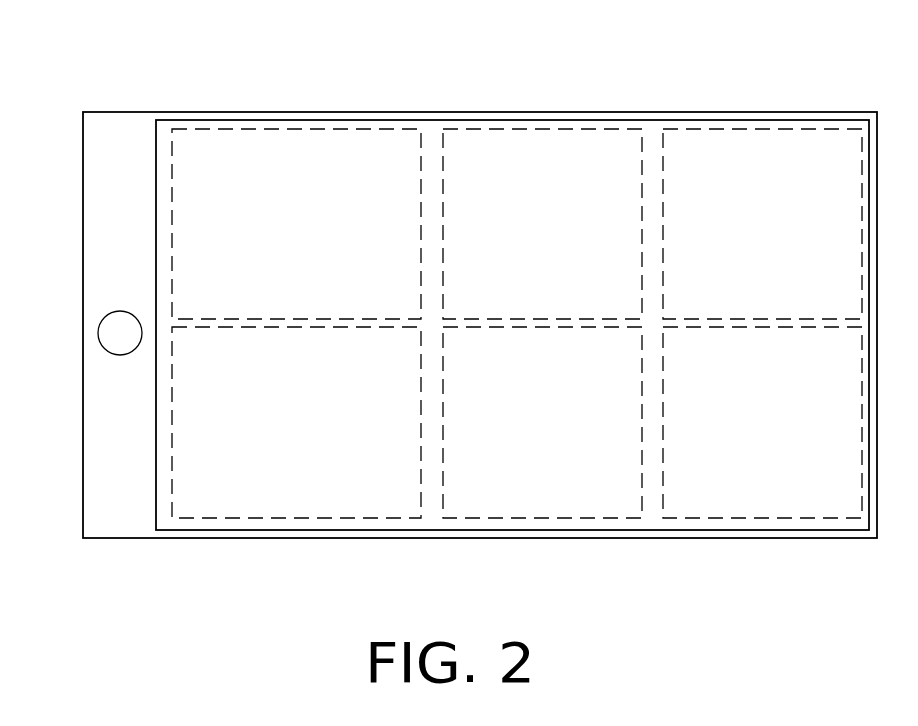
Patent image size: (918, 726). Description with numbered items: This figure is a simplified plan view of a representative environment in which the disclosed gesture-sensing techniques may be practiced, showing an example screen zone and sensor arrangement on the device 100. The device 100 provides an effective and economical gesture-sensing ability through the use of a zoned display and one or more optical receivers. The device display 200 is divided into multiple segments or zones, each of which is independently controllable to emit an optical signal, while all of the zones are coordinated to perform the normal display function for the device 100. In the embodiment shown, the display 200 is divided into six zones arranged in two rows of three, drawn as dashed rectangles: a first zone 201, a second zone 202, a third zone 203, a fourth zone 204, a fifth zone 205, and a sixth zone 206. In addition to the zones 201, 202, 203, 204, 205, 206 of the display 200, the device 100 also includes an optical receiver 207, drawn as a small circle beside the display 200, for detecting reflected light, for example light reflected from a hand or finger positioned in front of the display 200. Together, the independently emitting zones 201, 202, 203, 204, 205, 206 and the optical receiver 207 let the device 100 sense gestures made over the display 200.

The device 100 is at (538, 98).
The device display 200 is at (652, 128).
The first zone 201 is at (296, 224).
The second zone 202 is at (296, 422).
The third zone 203 is at (542, 224).
The fourth zone 204 is at (542, 422).
The fifth zone 205 is at (762, 224).
The sixth zone 206 is at (762, 422).
The optical receiver 207 is at (120, 333).